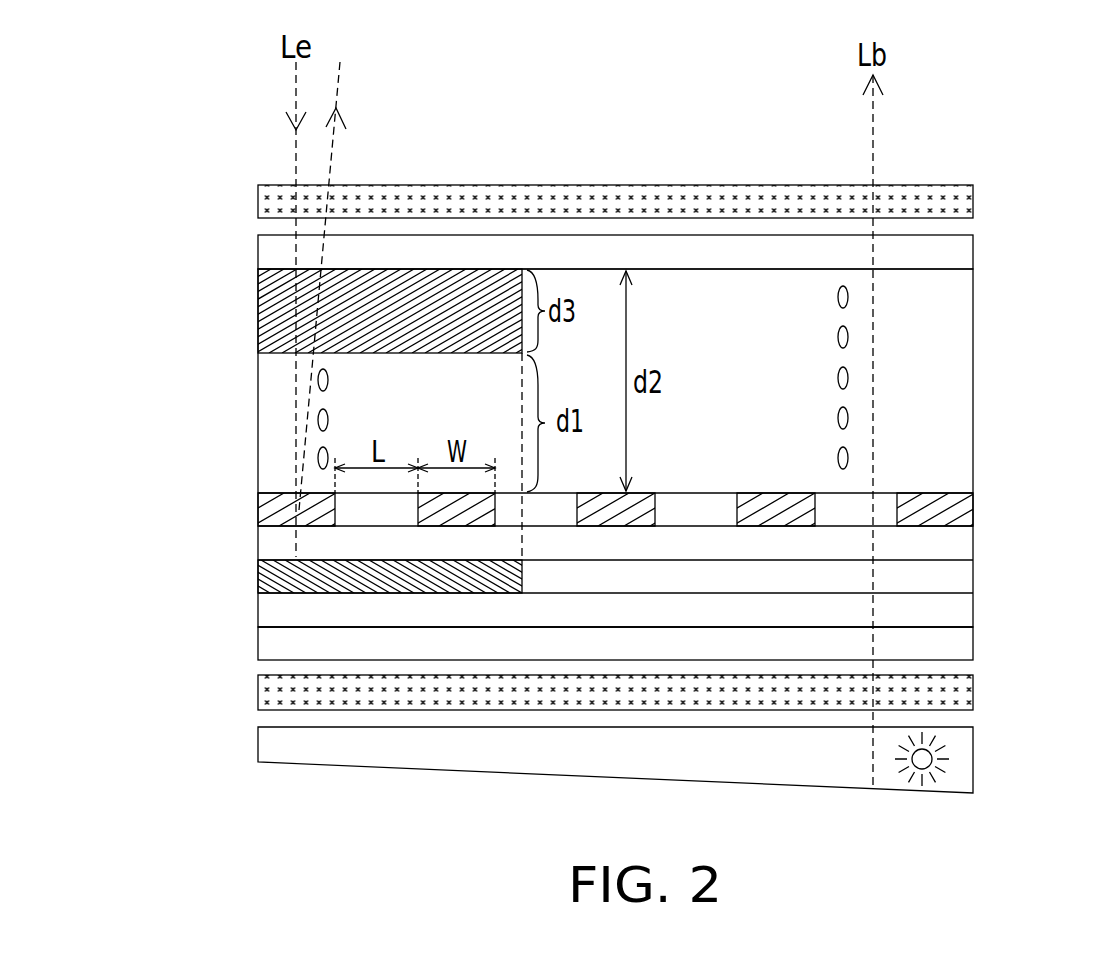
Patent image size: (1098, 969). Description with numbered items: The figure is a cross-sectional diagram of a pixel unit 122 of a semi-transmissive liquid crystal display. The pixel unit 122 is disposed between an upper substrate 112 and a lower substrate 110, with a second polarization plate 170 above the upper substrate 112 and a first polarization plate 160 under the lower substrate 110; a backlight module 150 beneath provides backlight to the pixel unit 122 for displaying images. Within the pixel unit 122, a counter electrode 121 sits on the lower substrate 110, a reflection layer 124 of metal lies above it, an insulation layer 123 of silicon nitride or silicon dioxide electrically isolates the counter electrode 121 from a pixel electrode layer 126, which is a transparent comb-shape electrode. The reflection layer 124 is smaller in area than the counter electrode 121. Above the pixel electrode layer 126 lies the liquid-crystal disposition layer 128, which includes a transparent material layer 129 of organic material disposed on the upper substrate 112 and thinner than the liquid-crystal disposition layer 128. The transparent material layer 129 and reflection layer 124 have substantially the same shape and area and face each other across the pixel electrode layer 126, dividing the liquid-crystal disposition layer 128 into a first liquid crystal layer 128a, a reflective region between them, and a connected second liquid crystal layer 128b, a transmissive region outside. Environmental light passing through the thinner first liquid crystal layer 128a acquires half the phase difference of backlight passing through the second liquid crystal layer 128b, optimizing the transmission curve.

The second polarization plate 170 is at (975, 200).
The upper substrate 112 is at (975, 244).
The pixel unit 122 is at (978, 270).
The liquid-crystal disposition layer 128 is at (252, 272).
The first liquid crystal layer 128a is at (453, 378).
The second liquid crystal layer 128b is at (708, 377).
The transparent material layer 129 is at (512, 268).
The pixel electrode layer 126 is at (258, 502).
The insulation layer 123 is at (258, 537).
The reflection layer 124 is at (258, 572).
The counter electrode 121 is at (258, 607).
The lower substrate 110 is at (975, 638).
The first polarization plate 160 is at (975, 688).
The backlight module 150 is at (975, 757).